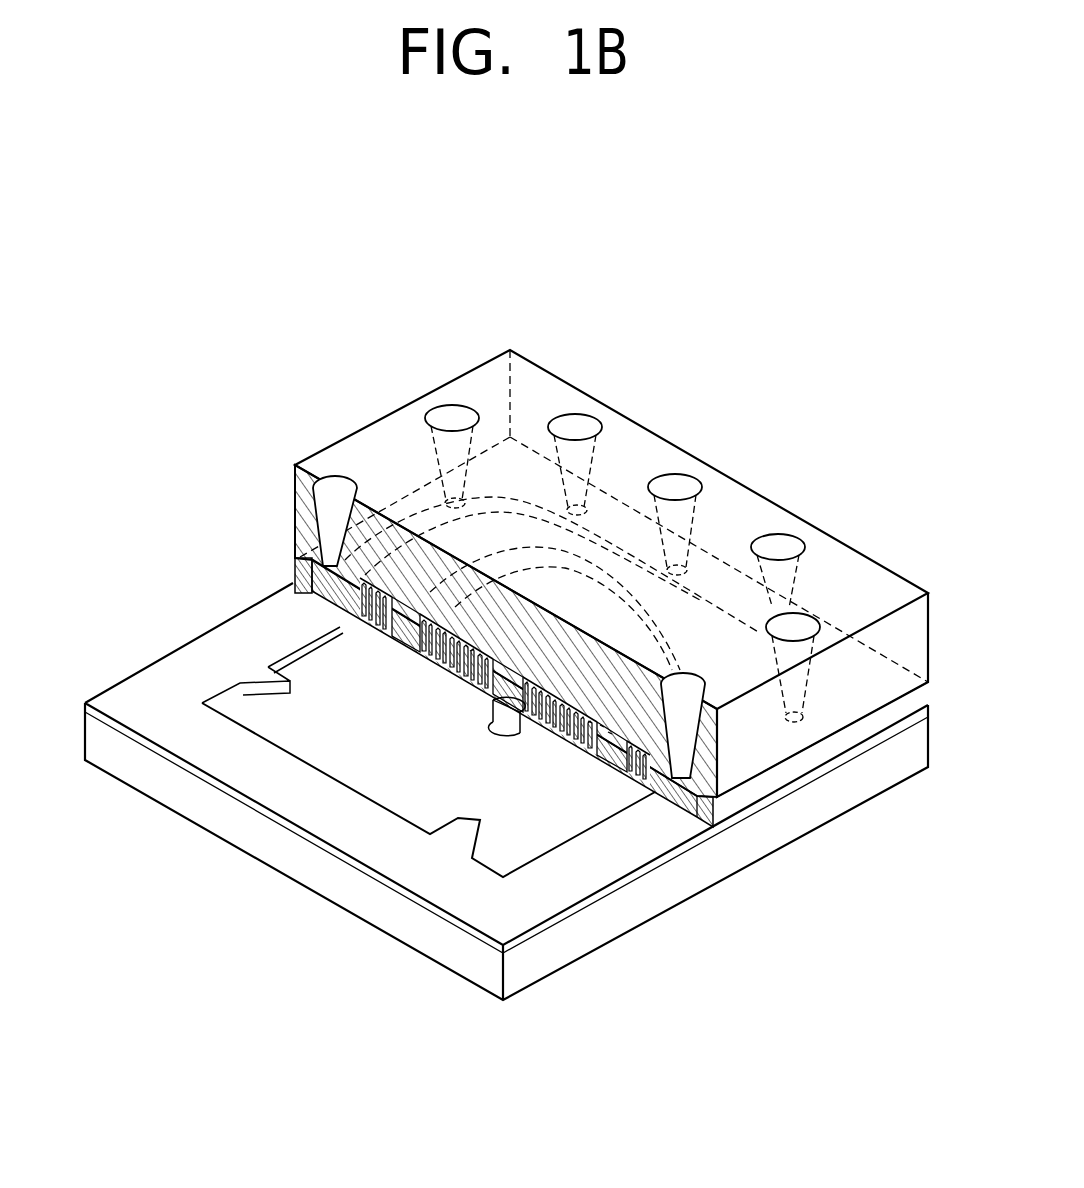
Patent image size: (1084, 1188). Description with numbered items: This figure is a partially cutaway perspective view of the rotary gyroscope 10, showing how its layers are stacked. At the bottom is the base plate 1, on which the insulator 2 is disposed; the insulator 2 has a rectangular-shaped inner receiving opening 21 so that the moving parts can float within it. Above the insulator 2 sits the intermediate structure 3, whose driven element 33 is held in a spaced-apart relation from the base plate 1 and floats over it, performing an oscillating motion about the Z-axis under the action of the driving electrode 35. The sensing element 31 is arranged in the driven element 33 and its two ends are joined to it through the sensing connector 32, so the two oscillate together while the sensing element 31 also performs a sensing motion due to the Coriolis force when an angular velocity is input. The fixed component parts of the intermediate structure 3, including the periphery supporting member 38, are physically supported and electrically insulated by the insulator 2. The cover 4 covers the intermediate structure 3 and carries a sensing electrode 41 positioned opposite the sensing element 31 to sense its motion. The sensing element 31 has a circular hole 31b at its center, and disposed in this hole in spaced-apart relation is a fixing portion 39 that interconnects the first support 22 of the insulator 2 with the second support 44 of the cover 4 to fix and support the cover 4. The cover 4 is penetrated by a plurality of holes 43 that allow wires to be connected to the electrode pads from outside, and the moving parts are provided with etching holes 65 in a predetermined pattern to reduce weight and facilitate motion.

The base plate 1 is at (92, 738).
The insulator 2 is at (113, 693).
The intermediate structure 3 is at (312, 603).
The cover 4 is at (579, 573).
The rotary gyroscope 10 is at (240, 371).
The inner receiving opening 21 is at (297, 750).
The first support 22 is at (497, 713).
The sensing element 31 is at (390, 645).
The circular hole 31b is at (463, 687).
The sensing connector 32 is at (592, 770).
The driven element 33 is at (600, 773).
The driving electrode 35 is at (610, 773).
The periphery supporting member 38 is at (740, 802).
The fixing portion 39 is at (495, 722).
The sensing electrode 41 is at (597, 747).
The holes 43 is at (680, 485).
The second support 44 is at (493, 700).
The etching holes 65 is at (430, 660).